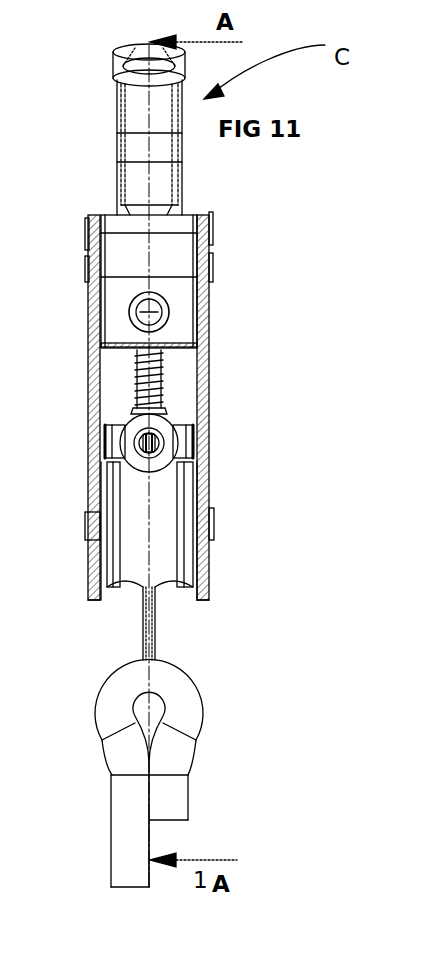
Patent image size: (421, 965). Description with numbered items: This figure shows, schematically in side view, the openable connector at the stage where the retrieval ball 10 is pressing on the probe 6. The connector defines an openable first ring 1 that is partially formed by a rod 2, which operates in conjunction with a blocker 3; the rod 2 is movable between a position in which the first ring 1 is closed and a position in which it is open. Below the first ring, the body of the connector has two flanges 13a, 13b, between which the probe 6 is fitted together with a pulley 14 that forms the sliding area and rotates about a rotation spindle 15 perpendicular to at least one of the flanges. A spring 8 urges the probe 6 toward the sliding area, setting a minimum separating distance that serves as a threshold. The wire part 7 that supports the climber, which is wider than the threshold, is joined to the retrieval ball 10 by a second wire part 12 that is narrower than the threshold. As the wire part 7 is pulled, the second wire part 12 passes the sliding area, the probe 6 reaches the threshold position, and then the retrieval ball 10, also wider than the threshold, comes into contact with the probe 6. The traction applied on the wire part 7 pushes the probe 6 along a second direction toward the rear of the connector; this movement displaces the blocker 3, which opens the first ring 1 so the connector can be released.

The first ring 1 is at (112, 162).
The rod 2 is at (182, 133).
The blocker 3 is at (142, 312).
The probe 6 is at (110, 431).
The wire part 7 is at (128, 826).
The spring 8 is at (140, 370).
The retrieval ball 10 is at (165, 432).
The second wire part 12 is at (148, 607).
The flange 13a is at (92, 312).
The flange 13b is at (206, 288).
The pulley 14 is at (118, 507).
The rotation spindle 15 is at (212, 523).